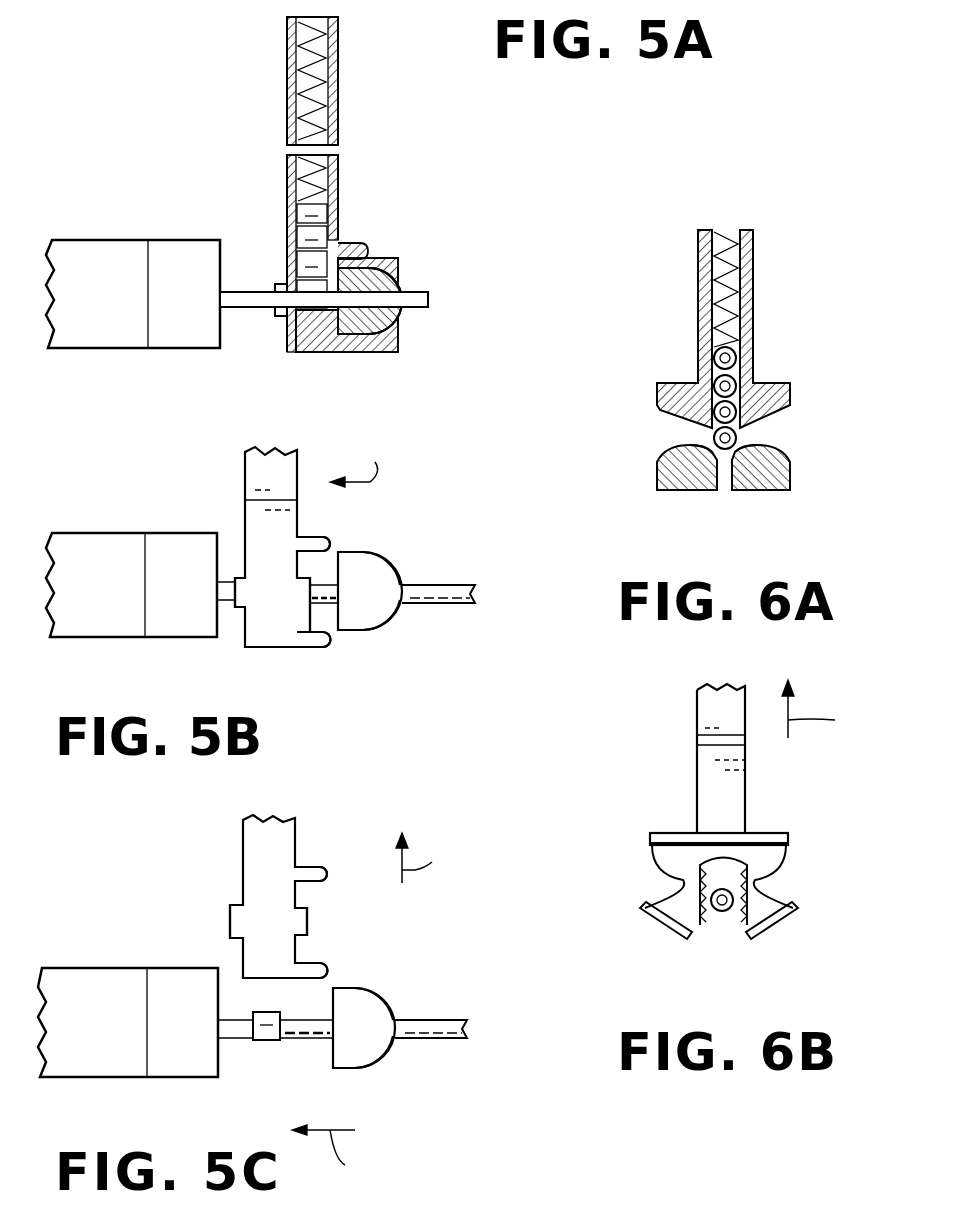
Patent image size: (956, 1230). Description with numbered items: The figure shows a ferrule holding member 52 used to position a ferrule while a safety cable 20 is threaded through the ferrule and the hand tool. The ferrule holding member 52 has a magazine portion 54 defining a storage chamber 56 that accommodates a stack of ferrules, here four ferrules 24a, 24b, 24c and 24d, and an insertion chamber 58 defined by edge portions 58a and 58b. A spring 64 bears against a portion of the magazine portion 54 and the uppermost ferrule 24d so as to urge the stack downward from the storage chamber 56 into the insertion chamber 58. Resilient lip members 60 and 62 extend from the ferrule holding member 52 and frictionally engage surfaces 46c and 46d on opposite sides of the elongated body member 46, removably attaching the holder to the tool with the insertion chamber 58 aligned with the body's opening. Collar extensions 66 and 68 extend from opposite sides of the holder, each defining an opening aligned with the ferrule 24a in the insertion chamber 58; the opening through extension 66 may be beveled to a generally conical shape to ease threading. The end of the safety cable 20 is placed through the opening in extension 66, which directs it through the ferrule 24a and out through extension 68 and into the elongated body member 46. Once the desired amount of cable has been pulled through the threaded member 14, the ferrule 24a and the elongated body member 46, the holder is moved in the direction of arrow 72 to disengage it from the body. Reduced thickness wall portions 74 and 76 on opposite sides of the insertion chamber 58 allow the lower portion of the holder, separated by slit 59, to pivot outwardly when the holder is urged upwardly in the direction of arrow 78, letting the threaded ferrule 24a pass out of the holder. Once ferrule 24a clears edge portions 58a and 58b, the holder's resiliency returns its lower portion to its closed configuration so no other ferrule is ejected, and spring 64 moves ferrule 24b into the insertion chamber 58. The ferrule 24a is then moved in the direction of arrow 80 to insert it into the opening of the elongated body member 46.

In FIG. 5A, the threaded member 14 is at (116, 265).
In FIG. 5B, the threaded member 14 is at (108, 537).
In FIG. 5C, the threaded member 14 is at (82, 975).
In FIG. 5A, the safety cable 20 is at (420, 308).
In FIG. 5A, the ferrule 24a is at (300, 290).
In FIG. 5C, the ferrule 24a is at (265, 1042).
In FIG. 6A, the ferrule 24a is at (712, 445).
In FIG. 6B, the ferrule 24a is at (722, 912).
In FIG. 5A, the ferrule 24b is at (300, 262).
In FIG. 6A, the ferrule 24b is at (714, 413).
In FIG. 5A, the ferrule 24c is at (300, 237).
In FIG. 6A, the ferrule 24c is at (714, 387).
In FIG. 5A, the ferrule 24d is at (300, 210).
In FIG. 6A, the ferrule 24d is at (714, 358).
In FIG. 5A, the elongated body member 46 is at (400, 283).
In FIG. 5B, the elongated body member 46 is at (390, 578).
In FIG. 5C, the elongated body member 46 is at (385, 1012).
In FIG. 5A, the surface 46c is at (372, 258).
In FIG. 5B, the surface 46c is at (360, 555).
In FIG. 5C, the surface 46c is at (355, 988).
In FIG. 5A, the surface 46d is at (360, 352).
In FIG. 5B, the surface 46d is at (355, 630).
In FIG. 5C, the surface 46d is at (350, 1068).
In FIG. 5A, the ferrule holding member 52 is at (335, 207).
In FIG. 5B, the ferrule holding member 52 is at (278, 586).
In FIG. 5C, the ferrule holding member 52 is at (256, 896).
In FIG. 6A, the ferrule holding member 52 is at (713, 395).
In FIG. 6B, the ferrule holding member 52 is at (713, 833).
In FIG. 5A, the magazine portion 54 is at (338, 112).
In FIG. 6A, the magazine portion 54 is at (703, 300).
In FIG. 5A, the storage chamber 56 is at (330, 168).
In FIG. 6A, the storage chamber 56 is at (712, 272).
In FIG. 6A, the insertion chamber 58 is at (770, 427).
In FIG. 6A, the edge portion 58a is at (695, 478).
In FIG. 6A, the edge portion 58b is at (755, 480).
In FIG. 6A, the slit 59 is at (724, 482).
In FIG. 5A, the resilient lip member 60 is at (370, 245).
In FIG. 5B, the resilient lip member 60 is at (318, 540).
In FIG. 5C, the resilient lip member 60 is at (312, 868).
In FIG. 6B, the resilient lip member 60 is at (773, 833).
In FIG. 5A, the resilient lip member 62 is at (378, 352).
In FIG. 5B, the resilient lip member 62 is at (310, 652).
In FIG. 5C, the resilient lip member 62 is at (316, 975).
In FIG. 6B, the resilient lip member 62 is at (655, 918).
In FIG. 5A, the spring 64 is at (300, 72).
In FIG. 6A, the spring 64 is at (745, 272).
In FIG. 5A, the collar extension 66 is at (280, 318).
In FIG. 5B, the collar extension 66 is at (238, 578).
In FIG. 5C, the collar extension 66 is at (232, 920).
In FIG. 5B, the collar extension 68 is at (345, 633).
In FIG. 5C, the collar extension 68 is at (308, 920).
In FIG. 5B, the arrow 72 is at (362, 467).
In FIG. 6A, the reduced thickness wall portion 74 is at (710, 438).
In FIG. 6B, the reduced thickness wall portion 74 is at (675, 880).
In FIG. 6A, the reduced thickness wall portion 76 is at (742, 438).
In FIG. 6B, the reduced thickness wall portion 76 is at (755, 880).
In FIG. 5C, the arrow 78 is at (430, 858).
In FIG. 6B, the arrow 78 is at (825, 709).
In FIG. 5C, the arrow 80 is at (330, 1155).